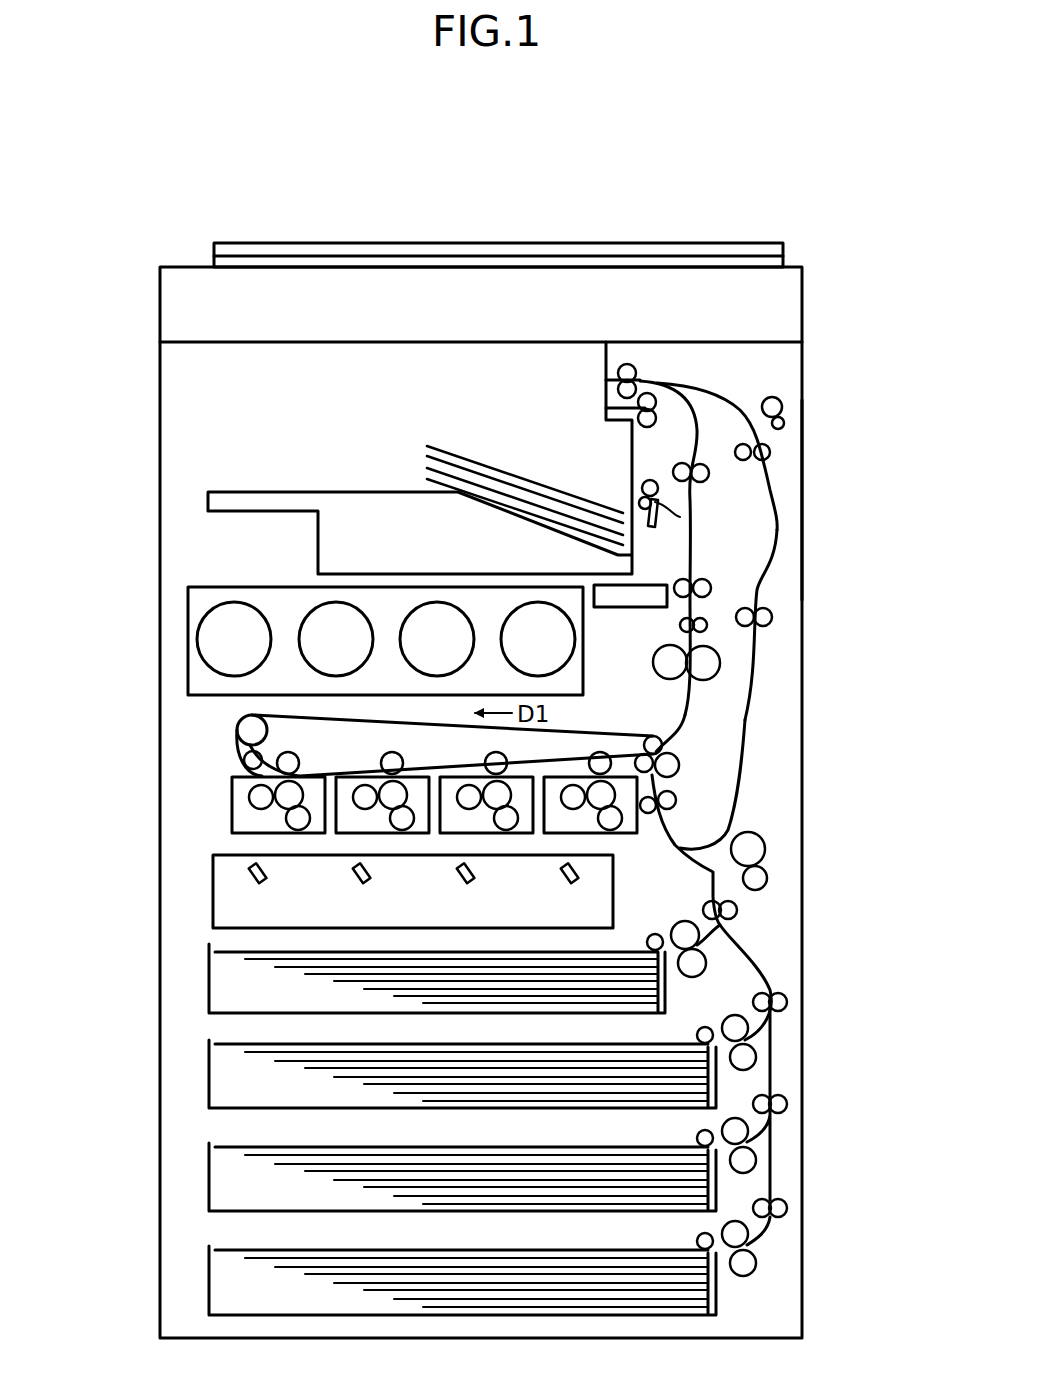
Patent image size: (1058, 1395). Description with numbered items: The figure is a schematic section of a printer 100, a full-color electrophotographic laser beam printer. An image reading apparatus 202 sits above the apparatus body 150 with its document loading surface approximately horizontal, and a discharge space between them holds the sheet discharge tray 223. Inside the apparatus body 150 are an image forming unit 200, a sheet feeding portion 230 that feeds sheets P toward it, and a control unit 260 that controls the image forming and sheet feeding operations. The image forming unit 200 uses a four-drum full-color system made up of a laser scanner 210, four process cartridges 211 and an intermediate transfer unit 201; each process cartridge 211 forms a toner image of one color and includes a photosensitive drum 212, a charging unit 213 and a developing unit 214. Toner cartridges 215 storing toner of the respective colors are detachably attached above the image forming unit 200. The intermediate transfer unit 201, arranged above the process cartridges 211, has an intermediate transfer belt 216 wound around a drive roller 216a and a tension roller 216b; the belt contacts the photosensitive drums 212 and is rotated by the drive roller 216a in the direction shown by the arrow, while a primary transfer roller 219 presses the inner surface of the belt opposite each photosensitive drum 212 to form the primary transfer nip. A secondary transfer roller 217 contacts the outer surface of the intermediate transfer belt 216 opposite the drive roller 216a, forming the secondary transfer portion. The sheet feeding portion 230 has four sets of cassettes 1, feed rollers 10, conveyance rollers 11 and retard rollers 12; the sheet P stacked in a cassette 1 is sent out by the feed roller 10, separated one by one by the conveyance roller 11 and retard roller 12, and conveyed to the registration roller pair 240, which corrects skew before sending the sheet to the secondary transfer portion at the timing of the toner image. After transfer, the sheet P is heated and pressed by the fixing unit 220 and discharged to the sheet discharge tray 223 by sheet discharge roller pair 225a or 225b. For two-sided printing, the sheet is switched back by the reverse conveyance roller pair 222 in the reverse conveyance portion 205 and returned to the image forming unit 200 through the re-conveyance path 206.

The printer 100 is at (828, 235).
The image reading apparatus 202 is at (152, 292).
The apparatus body 150 is at (803, 483).
The sheet discharge tray 223 is at (362, 490).
The reverse conveyance roller pair 222 is at (630, 368).
The sheet discharge roller pair 225b is at (650, 398).
The sheet discharge roller pair 225a is at (645, 480).
The reverse conveyance portion 205 is at (757, 392).
The re-conveyance path 206 is at (768, 550).
The control unit 260 is at (684, 585).
The fixing unit 220 is at (712, 663).
The toner cartridges 215 is at (203, 645).
The intermediate transfer unit 201 is at (463, 724).
The intermediate transfer belt 216 is at (656, 737).
The drive roller 216a is at (660, 742).
The tension roller 216b is at (245, 733).
The secondary transfer roller 217 is at (672, 766).
The registration roller pair 240 is at (670, 800).
The image forming unit 200 is at (355, 792).
The process cartridges 211 is at (232, 818).
The photosensitive drum 212 is at (301, 791).
The primary transfer roller 219 is at (490, 758).
The developing unit 214 is at (257, 797).
The charging unit 213 is at (288, 822).
The laser scanner 210 is at (213, 893).
The sheet feeding portion 230 is at (197, 985).
The cassette 1 is at (205, 966).
The sheet P is at (612, 950).
The feed roller 10 is at (655, 933).
The conveyance roller 11 is at (688, 921).
The retard roller 12 is at (703, 973).